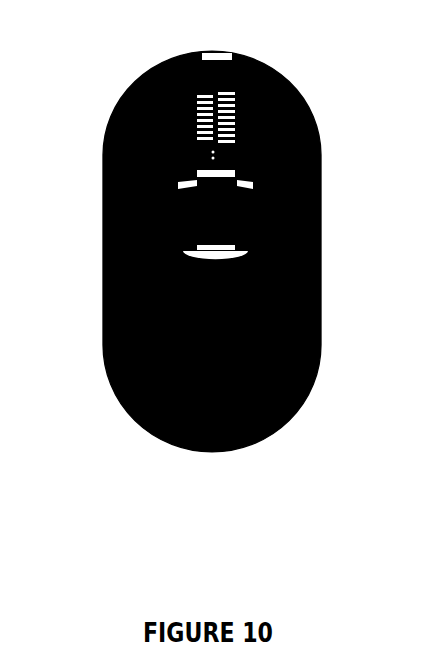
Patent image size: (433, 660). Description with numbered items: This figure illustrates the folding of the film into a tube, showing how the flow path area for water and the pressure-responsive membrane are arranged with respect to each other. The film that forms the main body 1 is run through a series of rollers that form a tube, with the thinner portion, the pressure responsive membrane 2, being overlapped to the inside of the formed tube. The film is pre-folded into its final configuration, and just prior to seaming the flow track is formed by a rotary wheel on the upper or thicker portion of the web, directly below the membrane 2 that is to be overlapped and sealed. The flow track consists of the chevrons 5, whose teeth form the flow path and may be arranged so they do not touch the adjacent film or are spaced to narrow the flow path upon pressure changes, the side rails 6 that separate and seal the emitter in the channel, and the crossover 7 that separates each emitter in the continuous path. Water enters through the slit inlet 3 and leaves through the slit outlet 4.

The main body 1 is at (313, 120).
The pressure responsive membrane 2 is at (218, 77).
The slit inlet 3 is at (257, 58).
The slit outlet 4 is at (321, 165).
The chevrons (teeth) 5 is at (120, 103).
The side rails 6 is at (108, 144).
The crossover 7 is at (107, 186).